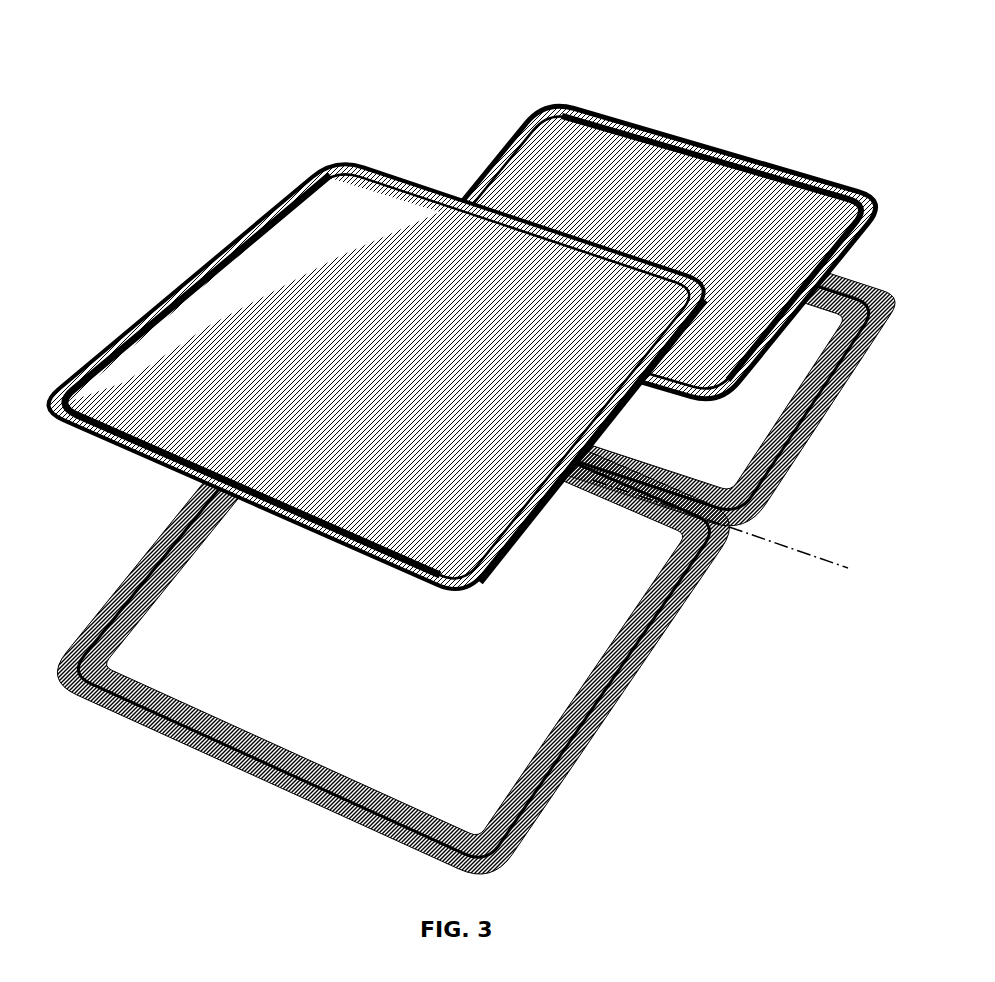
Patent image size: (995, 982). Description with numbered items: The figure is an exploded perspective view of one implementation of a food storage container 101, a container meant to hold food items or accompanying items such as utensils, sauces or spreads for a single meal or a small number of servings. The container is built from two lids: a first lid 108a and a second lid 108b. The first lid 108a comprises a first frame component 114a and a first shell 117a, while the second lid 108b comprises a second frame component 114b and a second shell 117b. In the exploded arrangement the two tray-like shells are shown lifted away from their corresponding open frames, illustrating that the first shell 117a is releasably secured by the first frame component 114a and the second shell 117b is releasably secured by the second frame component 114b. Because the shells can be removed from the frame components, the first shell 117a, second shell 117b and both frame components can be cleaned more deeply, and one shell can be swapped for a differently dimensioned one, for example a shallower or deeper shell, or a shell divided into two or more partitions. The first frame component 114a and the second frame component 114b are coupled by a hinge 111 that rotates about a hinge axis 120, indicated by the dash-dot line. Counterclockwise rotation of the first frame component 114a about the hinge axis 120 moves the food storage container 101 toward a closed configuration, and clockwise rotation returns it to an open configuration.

The food storage container 101 is at (781, 70).
The first lid 108a is at (740, 418).
The second lid 108b is at (157, 490).
The hinge 111 is at (720, 534).
The first frame component 114a is at (742, 452).
The second frame component 114b is at (215, 712).
The first shell 117a is at (672, 405).
The second shell 117b is at (322, 548).
The hinge axis 120 is at (850, 568).